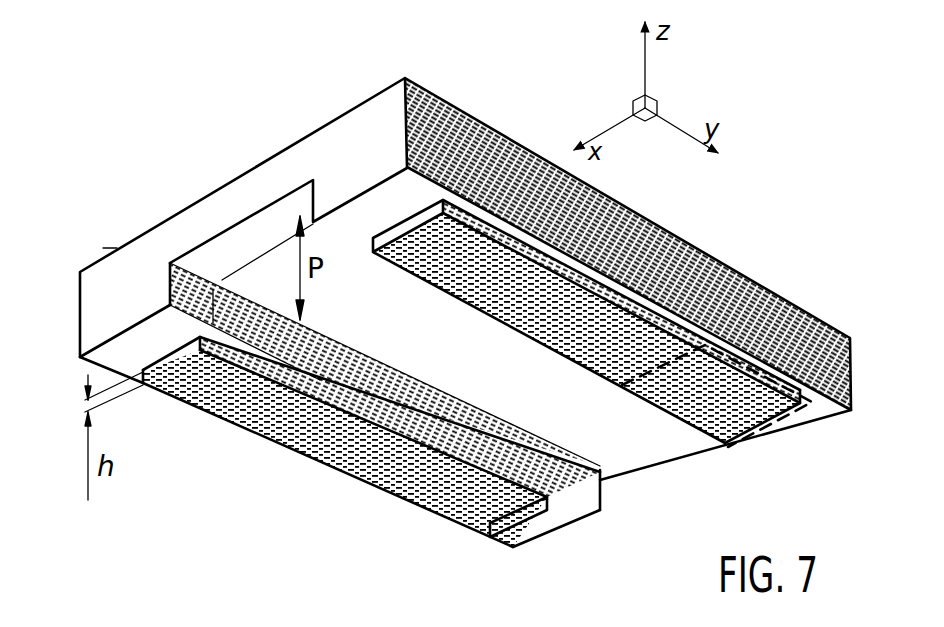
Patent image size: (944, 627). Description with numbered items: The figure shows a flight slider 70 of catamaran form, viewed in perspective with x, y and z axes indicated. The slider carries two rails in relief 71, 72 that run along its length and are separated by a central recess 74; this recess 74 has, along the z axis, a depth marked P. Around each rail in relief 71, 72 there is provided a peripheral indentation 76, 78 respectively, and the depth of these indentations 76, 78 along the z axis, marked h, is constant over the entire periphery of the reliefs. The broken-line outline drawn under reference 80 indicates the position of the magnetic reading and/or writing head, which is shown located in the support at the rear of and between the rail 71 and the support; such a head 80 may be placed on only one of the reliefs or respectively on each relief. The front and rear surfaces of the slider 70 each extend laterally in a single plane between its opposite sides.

The flight slider 70 is at (132, 232).
The rail in relief 71 is at (463, 262).
The rail in relief 72 is at (343, 437).
The recess 74 is at (622, 428).
The indentation 76 is at (398, 194).
The indentation 78 is at (500, 540).
The magnetic reading and/or writing head 80 is at (740, 352).